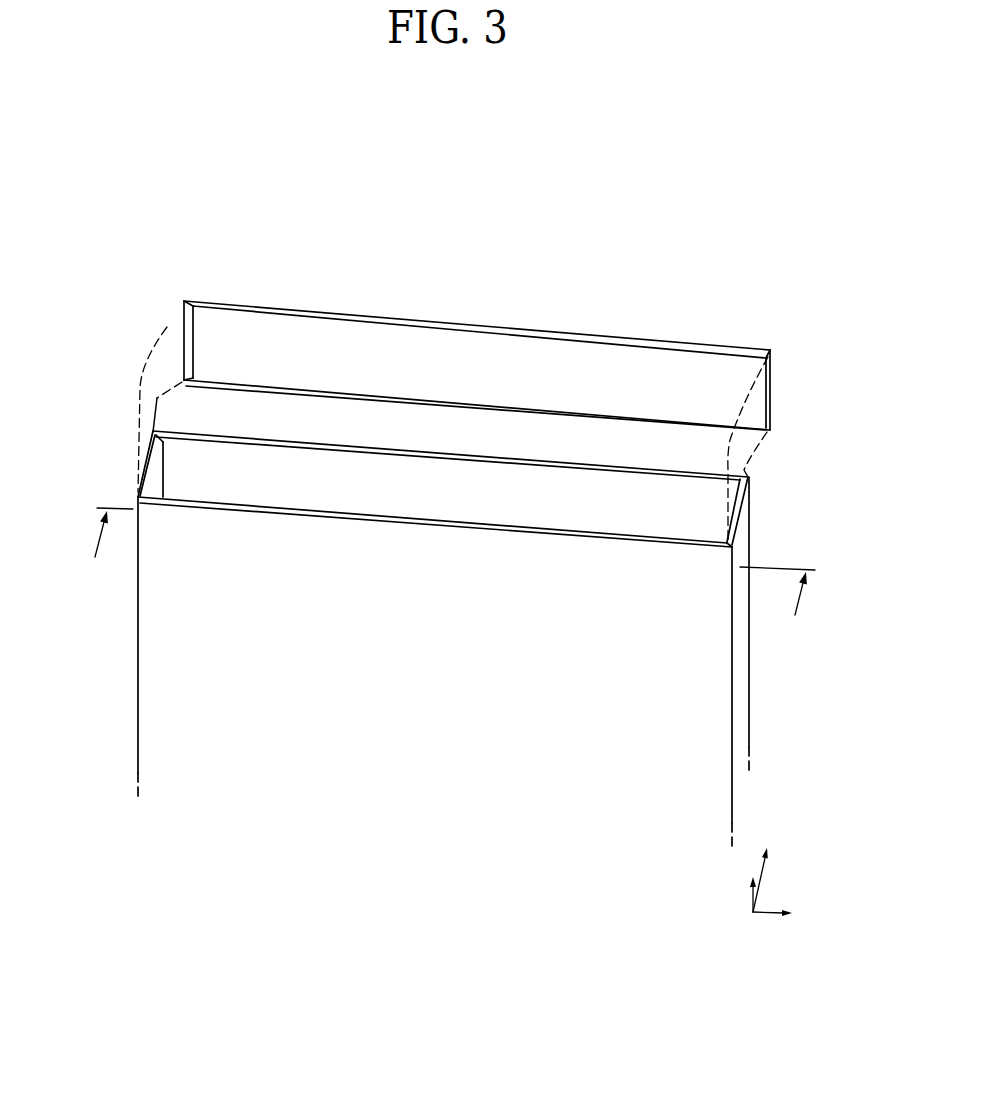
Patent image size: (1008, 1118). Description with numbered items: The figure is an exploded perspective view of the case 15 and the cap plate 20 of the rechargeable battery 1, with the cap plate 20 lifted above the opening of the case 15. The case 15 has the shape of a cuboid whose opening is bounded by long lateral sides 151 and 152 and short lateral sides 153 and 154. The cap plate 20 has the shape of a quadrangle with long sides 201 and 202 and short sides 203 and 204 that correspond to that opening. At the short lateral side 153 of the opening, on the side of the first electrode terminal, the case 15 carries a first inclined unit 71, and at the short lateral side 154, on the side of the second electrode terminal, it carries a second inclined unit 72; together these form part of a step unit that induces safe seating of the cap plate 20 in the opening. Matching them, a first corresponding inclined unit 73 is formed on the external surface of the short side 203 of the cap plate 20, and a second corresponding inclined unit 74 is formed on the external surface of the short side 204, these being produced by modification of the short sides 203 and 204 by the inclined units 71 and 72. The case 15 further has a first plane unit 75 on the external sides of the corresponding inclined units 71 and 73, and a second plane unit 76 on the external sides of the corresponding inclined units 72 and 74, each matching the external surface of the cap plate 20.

The display apparatus 1 is at (456, 245).
The cap plate 20 is at (601, 305).
The long side 201 is at (663, 343).
The long side 202 is at (507, 408).
The short side 203 is at (182, 348).
The short side 204 is at (773, 377).
The first corresponding inclined unit 73 is at (182, 323).
The second corresponding inclined unit 74 is at (768, 403).
The case 15 is at (404, 707).
The long lateral side 151 is at (439, 455).
The long lateral side 152 is at (448, 526).
The short lateral side 153 is at (137, 633).
The short lateral side 154 is at (747, 672).
The first inclined unit 71 is at (152, 471).
The first plane unit 75 is at (152, 442).
The second inclined unit 72 is at (738, 497).
The second plane unit 76 is at (737, 518).